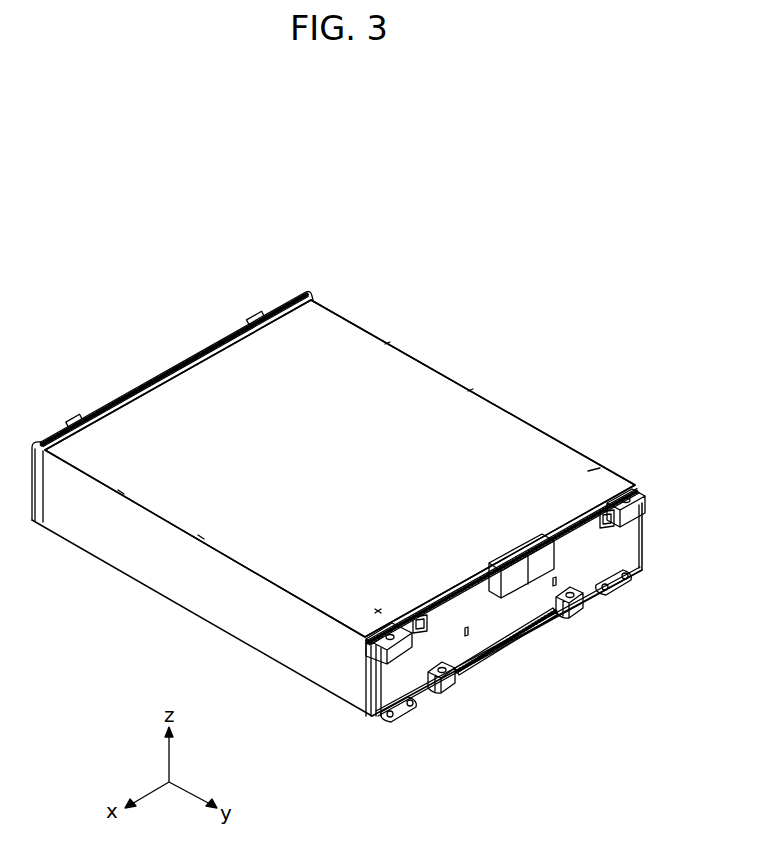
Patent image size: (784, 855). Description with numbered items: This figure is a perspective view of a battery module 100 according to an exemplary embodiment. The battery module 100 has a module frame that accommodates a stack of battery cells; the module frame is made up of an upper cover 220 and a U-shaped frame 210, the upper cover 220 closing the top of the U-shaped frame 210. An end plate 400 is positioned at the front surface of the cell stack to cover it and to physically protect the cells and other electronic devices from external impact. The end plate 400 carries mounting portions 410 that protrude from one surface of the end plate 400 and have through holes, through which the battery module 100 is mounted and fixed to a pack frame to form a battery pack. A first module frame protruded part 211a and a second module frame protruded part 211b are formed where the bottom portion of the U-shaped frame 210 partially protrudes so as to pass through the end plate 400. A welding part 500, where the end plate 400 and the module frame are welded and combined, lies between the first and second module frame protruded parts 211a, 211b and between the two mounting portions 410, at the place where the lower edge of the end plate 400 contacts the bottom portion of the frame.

The battery module 100 is at (396, 228).
The U-shaped frame 210 is at (190, 580).
The upper cover 220 is at (488, 433).
The first module frame protruded part 211a is at (397, 720).
The second module frame protruded part 211b is at (616, 588).
The end plate 400 is at (507, 620).
The mounting portion 410 is at (452, 688).
The welding part 500 is at (484, 651).